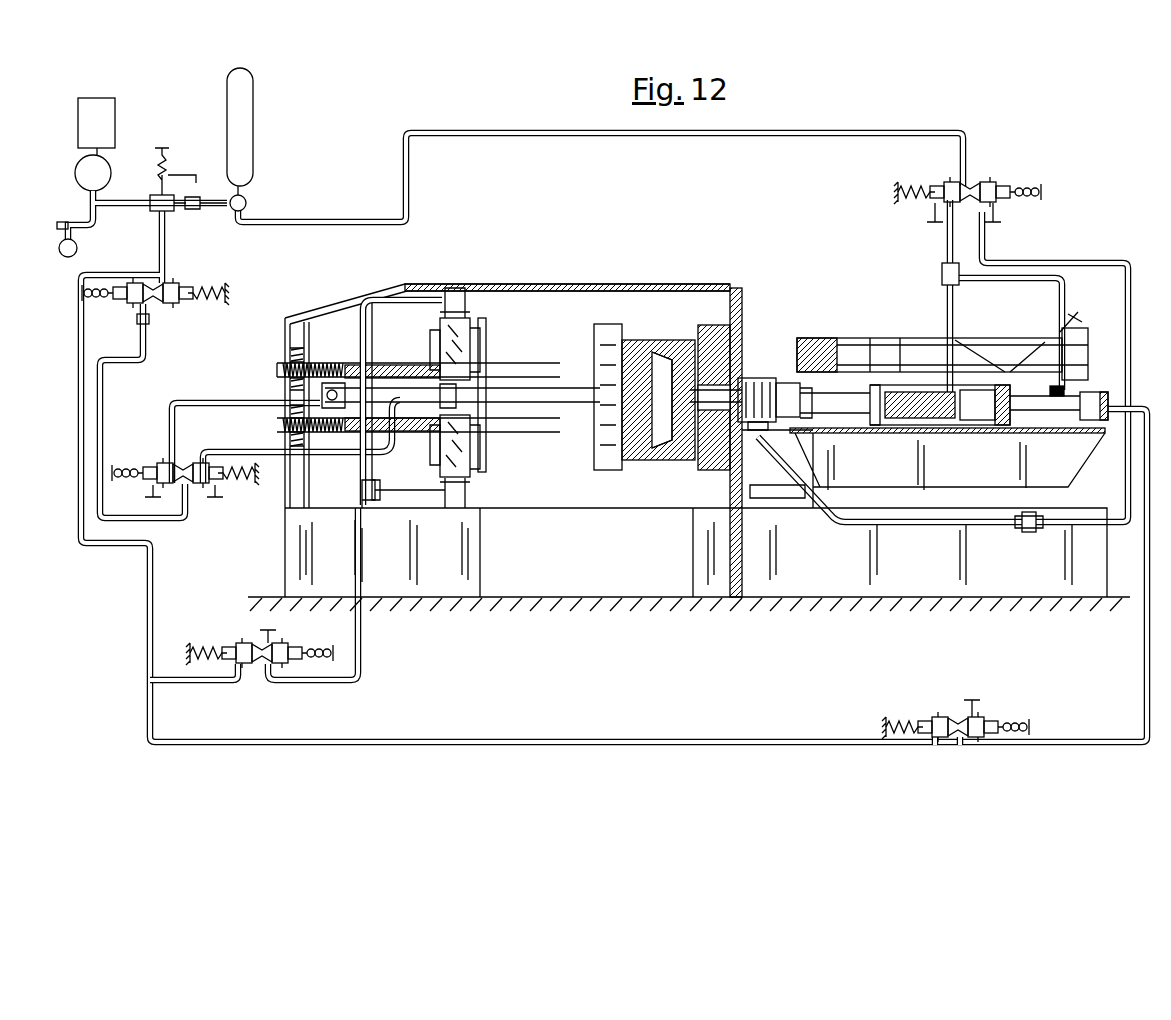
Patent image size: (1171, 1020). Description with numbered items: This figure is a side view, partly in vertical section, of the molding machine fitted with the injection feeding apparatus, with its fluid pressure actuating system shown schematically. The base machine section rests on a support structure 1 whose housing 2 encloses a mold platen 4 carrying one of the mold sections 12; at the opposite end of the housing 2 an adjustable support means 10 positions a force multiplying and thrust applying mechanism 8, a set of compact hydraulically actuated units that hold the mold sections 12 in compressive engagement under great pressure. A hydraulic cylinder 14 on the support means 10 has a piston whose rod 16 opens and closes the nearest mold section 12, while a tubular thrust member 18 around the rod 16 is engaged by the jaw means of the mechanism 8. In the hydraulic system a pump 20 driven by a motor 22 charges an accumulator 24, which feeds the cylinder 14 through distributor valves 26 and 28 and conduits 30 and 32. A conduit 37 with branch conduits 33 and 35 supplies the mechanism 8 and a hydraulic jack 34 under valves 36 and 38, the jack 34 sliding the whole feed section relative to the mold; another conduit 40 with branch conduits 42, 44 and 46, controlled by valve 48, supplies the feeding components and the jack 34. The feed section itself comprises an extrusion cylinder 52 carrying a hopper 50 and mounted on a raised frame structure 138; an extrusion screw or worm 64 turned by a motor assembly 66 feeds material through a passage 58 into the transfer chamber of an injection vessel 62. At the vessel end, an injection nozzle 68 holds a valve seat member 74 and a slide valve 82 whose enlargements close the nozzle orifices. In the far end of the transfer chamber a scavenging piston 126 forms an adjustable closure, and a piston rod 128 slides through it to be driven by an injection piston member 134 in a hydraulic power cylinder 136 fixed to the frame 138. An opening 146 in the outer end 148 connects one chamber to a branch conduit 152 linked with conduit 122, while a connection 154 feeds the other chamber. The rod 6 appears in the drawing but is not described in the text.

The support structure 1 is at (288, 552).
The housing 2 is at (548, 284).
The mold platen 4 is at (713, 322).
The tie rod 6 is at (278, 370).
The force multiplying and thrust applying mechanism 8 is at (465, 470).
The adjustable support means 10 is at (395, 360).
The mold sections 12 is at (658, 462).
The hydraulic cylinder 14 is at (372, 390).
The rod 16 is at (503, 403).
The tubular thrust member 18 is at (503, 387).
The hydraulic pump 20 is at (110, 166).
The motor 22 is at (116, 112).
The accumulator 24 is at (254, 114).
The distributor valve 26 is at (168, 285).
The distributor valve 28 is at (228, 480).
The conduit 30 is at (188, 402).
The conduit 32 is at (242, 450).
The branch conduit 33 is at (362, 653).
The hydraulic jack 34 is at (1108, 394).
The branch conduit 35 is at (512, 743).
The valve 36 is at (240, 643).
The conduit 37 is at (80, 414).
The valve 38 is at (925, 717).
The conduit 40 is at (543, 136).
The branch conduit 42 is at (972, 340).
The branch conduit 44 is at (1130, 266).
The branch conduit 46 is at (1028, 278).
The valve 48 is at (975, 182).
The hopper 50 is at (1084, 313).
The extrusion cylinder 52 is at (865, 340).
The duct or passage 58 is at (795, 355).
The injection vessel 62 is at (750, 380).
The extrusion screw or worm 64 is at (815, 340).
The motor assembly 66 is at (1080, 366).
The injection nozzle 68 is at (745, 340).
The valve seat member 74 is at (680, 480).
The slide valve 82 is at (594, 475).
The conduit 122 is at (888, 524).
The scavenging piston 126 is at (878, 425).
The piston rod 128 is at (782, 425).
The hydraulic injection piston member 134 is at (912, 425).
The hydraulic power cylinder 136 is at (972, 425).
The raised frame structure 138 is at (1075, 440).
The opening 146 is at (1003, 425).
The outer end 148 is at (1000, 345).
The branch conduit 152 is at (1068, 433).
The connection 154 is at (930, 385).